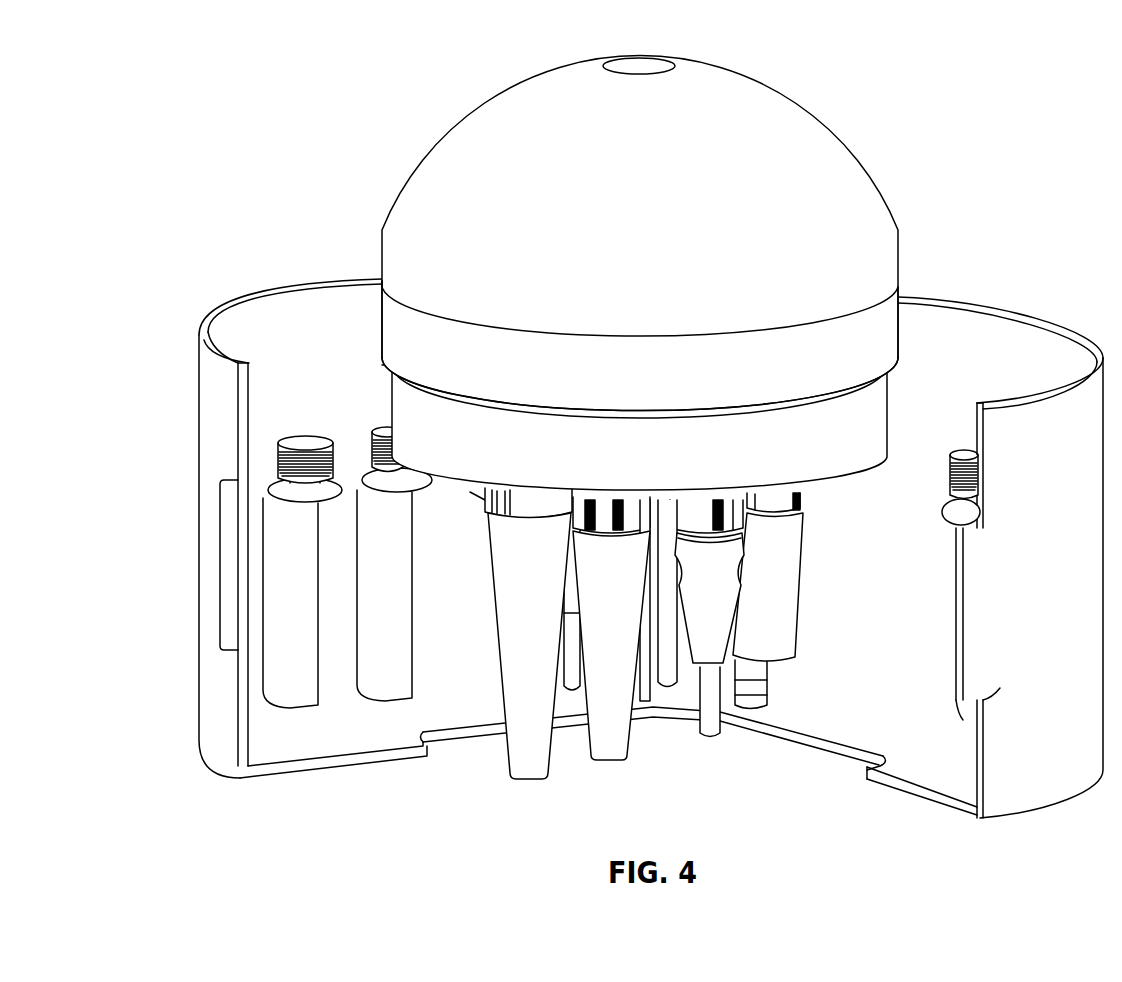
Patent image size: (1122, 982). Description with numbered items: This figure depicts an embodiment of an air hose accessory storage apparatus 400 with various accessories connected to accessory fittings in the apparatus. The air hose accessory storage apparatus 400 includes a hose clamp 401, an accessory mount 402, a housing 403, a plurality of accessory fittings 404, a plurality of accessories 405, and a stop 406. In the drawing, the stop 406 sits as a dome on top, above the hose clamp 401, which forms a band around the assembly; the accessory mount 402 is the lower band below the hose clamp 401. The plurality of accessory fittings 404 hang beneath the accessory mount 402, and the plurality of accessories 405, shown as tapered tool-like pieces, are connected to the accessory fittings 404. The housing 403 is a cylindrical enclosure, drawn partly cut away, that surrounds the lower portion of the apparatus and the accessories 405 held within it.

The air hose accessory storage apparatus 400 is at (150, 92).
The hose clamp 401 is at (645, 382).
The accessory mount 402 is at (645, 470).
The housing 403 is at (163, 352).
The plurality of accessory fittings 404 is at (807, 500).
The plurality of accessories 405 is at (483, 773).
The stop 406 is at (645, 199).